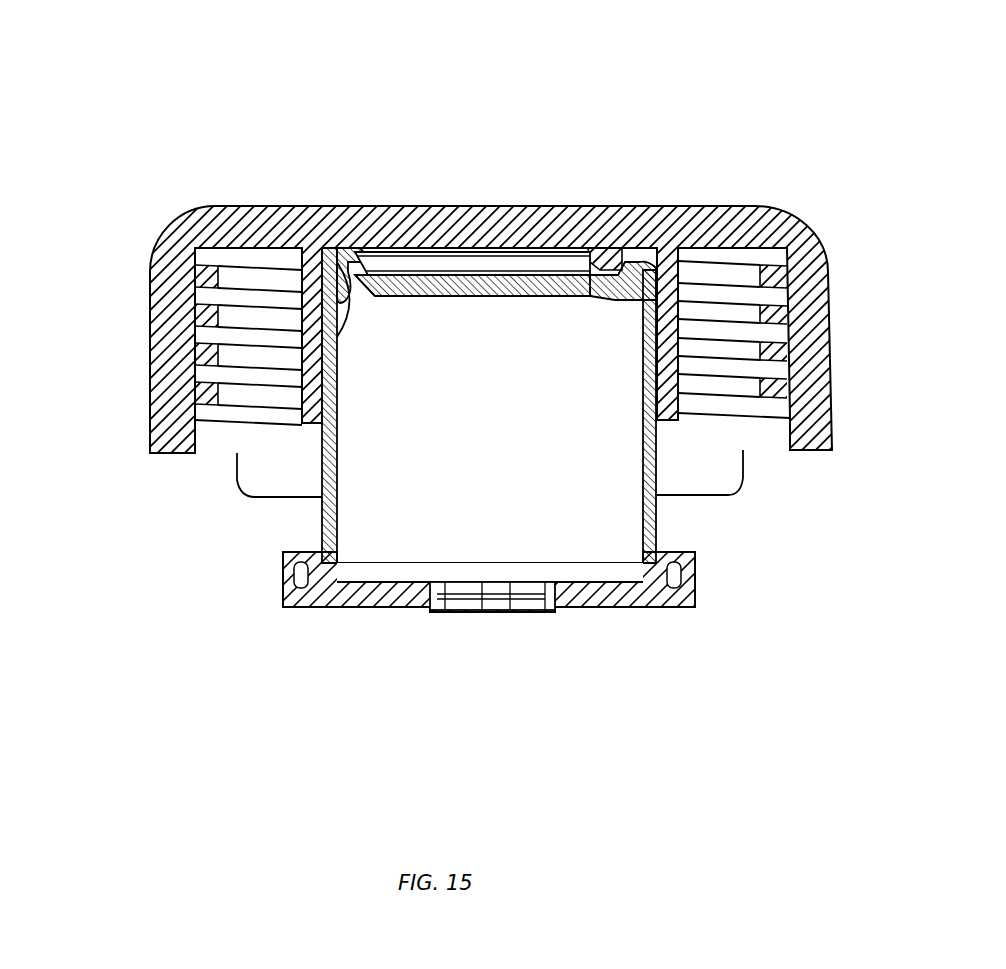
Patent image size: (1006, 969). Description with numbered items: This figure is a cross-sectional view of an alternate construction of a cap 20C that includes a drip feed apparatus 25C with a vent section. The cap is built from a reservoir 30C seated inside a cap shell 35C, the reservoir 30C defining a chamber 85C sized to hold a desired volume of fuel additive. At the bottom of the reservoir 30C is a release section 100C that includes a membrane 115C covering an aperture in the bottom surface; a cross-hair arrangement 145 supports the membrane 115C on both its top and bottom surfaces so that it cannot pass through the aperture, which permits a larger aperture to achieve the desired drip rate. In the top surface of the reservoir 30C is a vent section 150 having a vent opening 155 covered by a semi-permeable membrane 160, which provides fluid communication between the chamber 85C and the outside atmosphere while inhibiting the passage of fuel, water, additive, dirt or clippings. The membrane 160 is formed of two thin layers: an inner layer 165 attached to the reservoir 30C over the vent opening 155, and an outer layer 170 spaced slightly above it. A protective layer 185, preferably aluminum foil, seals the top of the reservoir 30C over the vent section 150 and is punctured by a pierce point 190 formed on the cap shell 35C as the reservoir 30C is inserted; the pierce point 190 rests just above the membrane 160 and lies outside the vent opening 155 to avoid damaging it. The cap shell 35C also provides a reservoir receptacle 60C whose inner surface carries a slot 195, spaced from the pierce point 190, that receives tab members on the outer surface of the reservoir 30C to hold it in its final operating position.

The cap 20C is at (822, 112).
The drip feed apparatus 25C is at (200, 647).
The reservoir 30C is at (654, 526).
The cap shell 35C is at (832, 325).
The reservoir receptacle 60C is at (303, 441).
The chamber 85C is at (522, 456).
The release section 100C is at (428, 630).
The membrane 115C is at (518, 600).
The cross-hair arrangement 145 is at (484, 585).
The vent section 150 is at (421, 318).
The vent opening 155 is at (508, 294).
The semi-permeable membrane 160 is at (446, 254).
The inner layer 165 is at (470, 278).
The outer layer 170 is at (414, 250).
The protective layer 185 is at (570, 262).
The pierce point 190 is at (627, 268).
The slot 195 is at (322, 248).